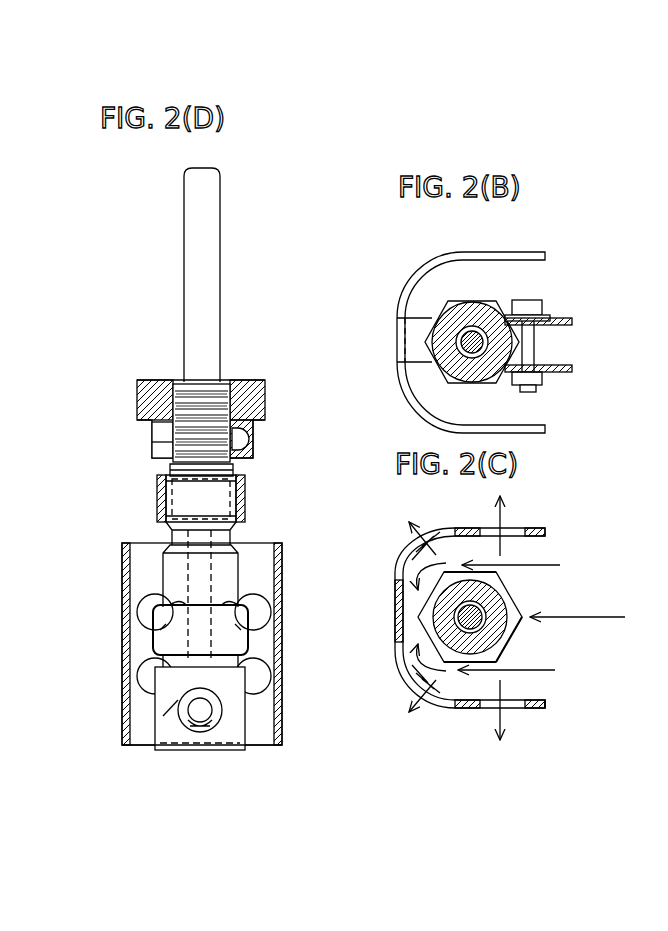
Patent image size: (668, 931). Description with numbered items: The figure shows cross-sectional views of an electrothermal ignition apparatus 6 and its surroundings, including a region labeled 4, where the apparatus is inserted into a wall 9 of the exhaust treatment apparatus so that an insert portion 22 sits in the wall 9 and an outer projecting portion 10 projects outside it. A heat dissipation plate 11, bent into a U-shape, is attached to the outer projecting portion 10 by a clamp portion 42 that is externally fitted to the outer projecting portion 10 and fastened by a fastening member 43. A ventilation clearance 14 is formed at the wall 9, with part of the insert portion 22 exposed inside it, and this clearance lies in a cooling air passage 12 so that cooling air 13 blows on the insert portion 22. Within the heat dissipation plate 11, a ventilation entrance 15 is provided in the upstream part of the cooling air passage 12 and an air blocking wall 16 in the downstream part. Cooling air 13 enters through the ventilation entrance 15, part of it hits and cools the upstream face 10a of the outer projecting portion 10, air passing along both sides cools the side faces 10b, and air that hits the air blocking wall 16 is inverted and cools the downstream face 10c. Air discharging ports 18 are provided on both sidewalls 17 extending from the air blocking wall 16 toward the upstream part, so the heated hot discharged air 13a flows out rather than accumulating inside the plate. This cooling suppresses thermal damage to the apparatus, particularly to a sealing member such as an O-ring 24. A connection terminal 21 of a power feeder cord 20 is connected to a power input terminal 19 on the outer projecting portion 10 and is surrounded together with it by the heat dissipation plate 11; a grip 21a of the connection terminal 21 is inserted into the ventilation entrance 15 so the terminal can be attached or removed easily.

In FIG. 2D, the mounting portion 4 is at (156, 357).
In FIG. 2D, the electrothermal ignition apparatus 6 is at (222, 292).
In FIG. 2D, the wall of the exhaust treatment apparatus 9 is at (258, 414).
In FIG. 2D, the outer projecting portion 10 is at (244, 578).
In FIG. 2B, the outer projecting portion 10 is at (496, 390).
In FIG. 2C, the outer projecting portion 10 is at (528, 640).
In FIG. 2C, the upstream face 10a is at (512, 608).
In FIG. 2C, the side faces 10b is at (504, 570).
In FIG. 2C, the downstream face 10c is at (416, 620).
In FIG. 2D, the heat dissipation plate 11 is at (120, 579).
In FIG. 2B, the heat dissipation plate 11 is at (410, 274).
In FIG. 2C, the heat dissipation plate 11 is at (394, 572).
In FIG. 2C, the cooling air passage 12 is at (656, 663).
In FIG. 2C, the cooling air 13 is at (578, 617).
In FIG. 2C, the hot discharged air 13a is at (414, 536).
In FIG. 2D, the ventilation clearance 14 is at (162, 437).
In FIG. 2C, the ventilation entrance 15 is at (550, 704).
In FIG. 2D, the air blocking wall 16 is at (250, 727).
In FIG. 2B, the air blocking wall 16 is at (400, 380).
In FIG. 2C, the air blocking wall 16 is at (398, 624).
In FIG. 2D, the sidewalls 17 is at (120, 692).
In FIG. 2B, the sidewalls 17 is at (532, 252).
In FIG. 2C, the sidewalls 17 is at (540, 528).
In FIG. 2D, the air discharging ports 18 is at (139, 672).
In FIG. 2C, the air discharging ports 18 is at (468, 528).
In FIG. 2D, the power input terminal 19 is at (176, 714).
In FIG. 2D, the power feeder cord 20 is at (188, 728).
In FIG. 2D, the connection terminal 21 is at (226, 734).
In FIG. 2D, the grip 21a is at (198, 734).
In FIG. 2D, the insert portion 22 is at (228, 405).
In FIG. 2D, the O-ring 24 is at (182, 594).
In FIG. 2D, the clamp portion 42 is at (247, 498).
In FIG. 2B, the clamp portion 42 is at (574, 321).
In FIG. 2B, the fastening member 43 is at (536, 302).